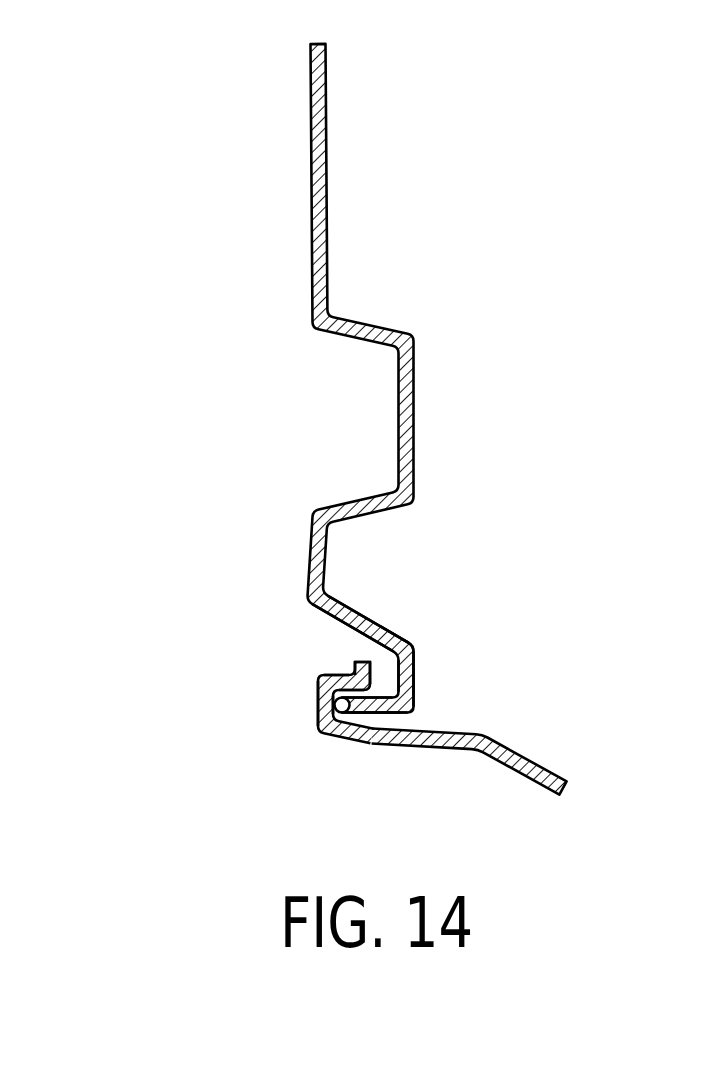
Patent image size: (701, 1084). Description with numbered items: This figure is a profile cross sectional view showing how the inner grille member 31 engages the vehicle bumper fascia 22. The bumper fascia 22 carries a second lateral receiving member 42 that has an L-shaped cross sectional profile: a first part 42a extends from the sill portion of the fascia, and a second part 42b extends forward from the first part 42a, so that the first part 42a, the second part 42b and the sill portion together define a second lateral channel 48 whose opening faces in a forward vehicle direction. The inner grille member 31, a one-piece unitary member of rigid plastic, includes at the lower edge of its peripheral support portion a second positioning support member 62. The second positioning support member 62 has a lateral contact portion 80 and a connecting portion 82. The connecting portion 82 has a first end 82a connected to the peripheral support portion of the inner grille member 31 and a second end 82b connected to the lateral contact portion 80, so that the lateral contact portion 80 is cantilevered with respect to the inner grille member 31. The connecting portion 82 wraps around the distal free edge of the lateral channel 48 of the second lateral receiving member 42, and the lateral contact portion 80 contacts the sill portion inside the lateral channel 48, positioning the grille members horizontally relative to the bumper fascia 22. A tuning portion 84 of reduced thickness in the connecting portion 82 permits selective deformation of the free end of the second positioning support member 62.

The inner grille member 31 is at (417, 372).
The second positioning support member 62 is at (422, 637).
The connecting portion 82 is at (417, 655).
The first end 82a is at (312, 599).
The second end 82b is at (413, 710).
The tuning portion 84 is at (413, 680).
The lateral contact portion 80 is at (372, 715).
The vehicle bumper fascia 22 is at (553, 765).
The second lateral receiving member 42 is at (300, 718).
The first part 42a is at (320, 698).
The second part 42b is at (338, 677).
The second lateral channel 48 is at (378, 680).